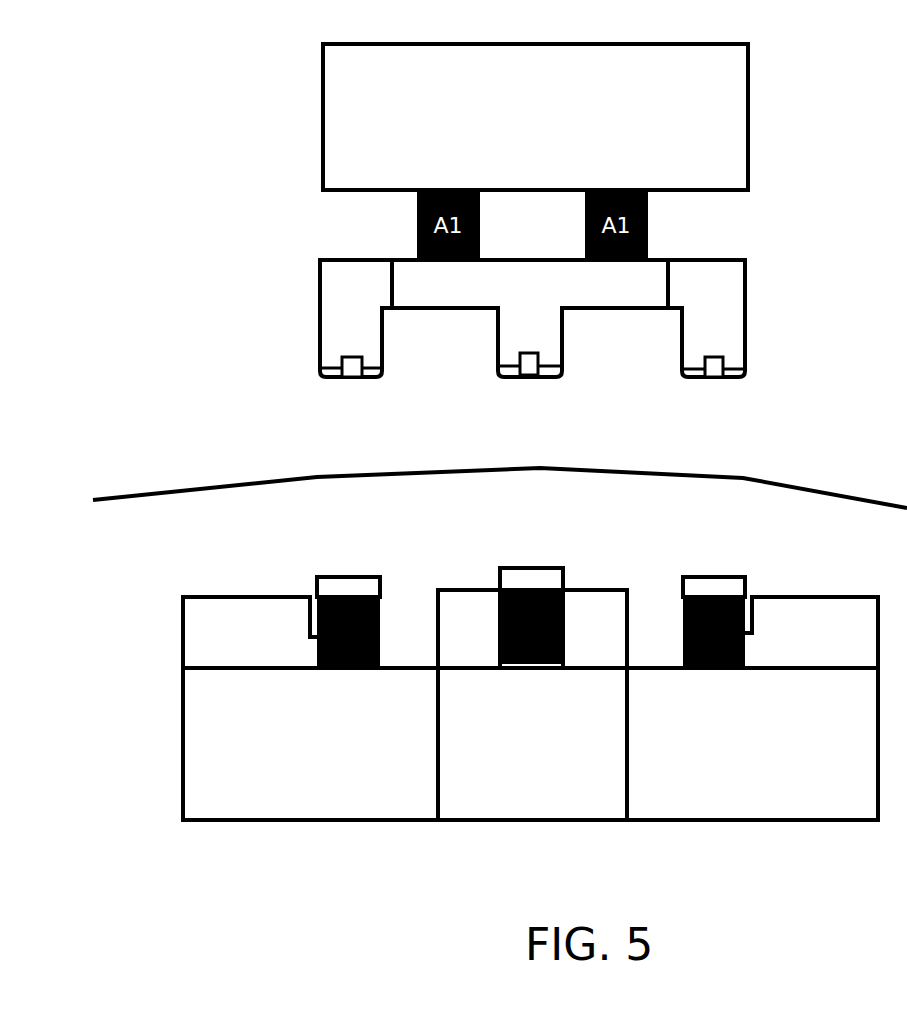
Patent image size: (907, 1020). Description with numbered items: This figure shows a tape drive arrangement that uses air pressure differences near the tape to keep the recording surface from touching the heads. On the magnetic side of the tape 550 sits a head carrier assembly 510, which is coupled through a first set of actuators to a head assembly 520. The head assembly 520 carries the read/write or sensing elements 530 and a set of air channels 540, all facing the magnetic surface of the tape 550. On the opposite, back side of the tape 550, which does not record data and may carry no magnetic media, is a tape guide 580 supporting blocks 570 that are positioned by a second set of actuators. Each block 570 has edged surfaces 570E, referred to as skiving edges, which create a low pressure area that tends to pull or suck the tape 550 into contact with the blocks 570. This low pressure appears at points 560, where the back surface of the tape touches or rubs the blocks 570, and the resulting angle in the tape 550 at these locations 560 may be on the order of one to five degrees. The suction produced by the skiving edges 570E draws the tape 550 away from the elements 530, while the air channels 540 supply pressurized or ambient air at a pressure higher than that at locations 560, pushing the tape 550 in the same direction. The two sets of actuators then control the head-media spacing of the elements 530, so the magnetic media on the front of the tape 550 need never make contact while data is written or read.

The head carrier assembly 510 is at (535, 117).
The head assembly 520 is at (320, 276).
The read/write or sensing elements 530 is at (350, 357).
The air channels 540 is at (383, 378).
The tape 550 is at (185, 487).
The low pressure areas 560 is at (317, 483).
The blocks 570 is at (533, 568).
The edged surfaces (skiving edges) 570E is at (317, 580).
The tape guide 580 is at (323, 820).